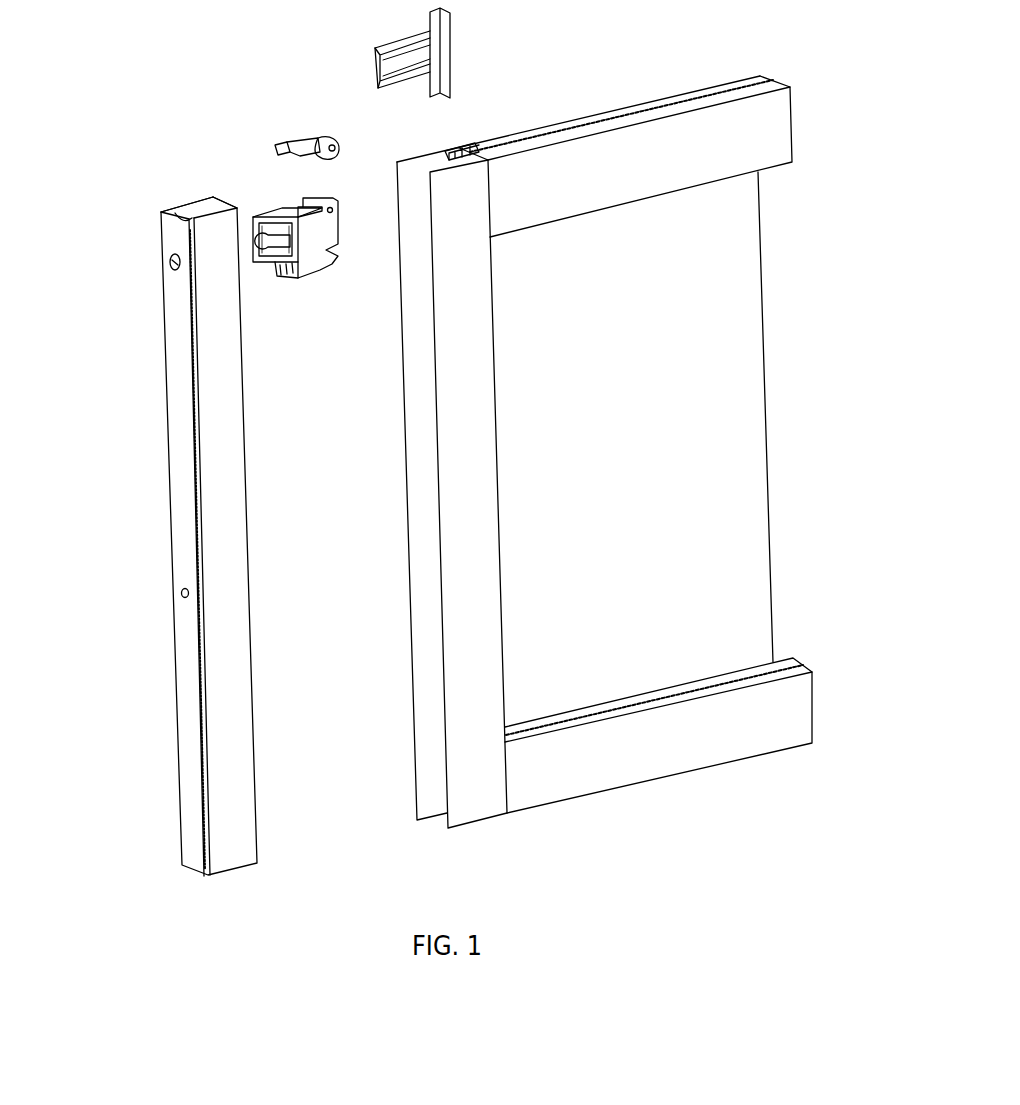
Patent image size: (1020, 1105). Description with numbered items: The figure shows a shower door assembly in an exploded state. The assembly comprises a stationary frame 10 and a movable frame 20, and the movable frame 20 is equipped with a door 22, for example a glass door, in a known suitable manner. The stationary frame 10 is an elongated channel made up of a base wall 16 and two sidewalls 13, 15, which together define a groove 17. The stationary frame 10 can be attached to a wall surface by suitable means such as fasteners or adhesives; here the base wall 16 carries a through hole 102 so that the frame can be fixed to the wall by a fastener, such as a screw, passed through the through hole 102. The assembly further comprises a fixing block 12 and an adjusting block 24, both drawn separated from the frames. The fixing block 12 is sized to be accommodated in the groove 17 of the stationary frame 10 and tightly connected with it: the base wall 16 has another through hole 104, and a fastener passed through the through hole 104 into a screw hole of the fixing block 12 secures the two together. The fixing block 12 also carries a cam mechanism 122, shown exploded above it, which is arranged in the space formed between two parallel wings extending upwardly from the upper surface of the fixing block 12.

The stationary frame 10 is at (187, 658).
The fixing block 12 is at (310, 255).
The sidewall 13 is at (222, 552).
The sidewall 15 is at (175, 207).
The base wall 16 is at (182, 427).
The groove 17 is at (222, 207).
The movable frame 20 is at (483, 793).
The door 22 is at (732, 463).
The adjusting block 24 is at (455, 12).
The through hole 102 is at (185, 587).
The through hole 104 is at (168, 260).
The cam mechanism 122 is at (332, 140).